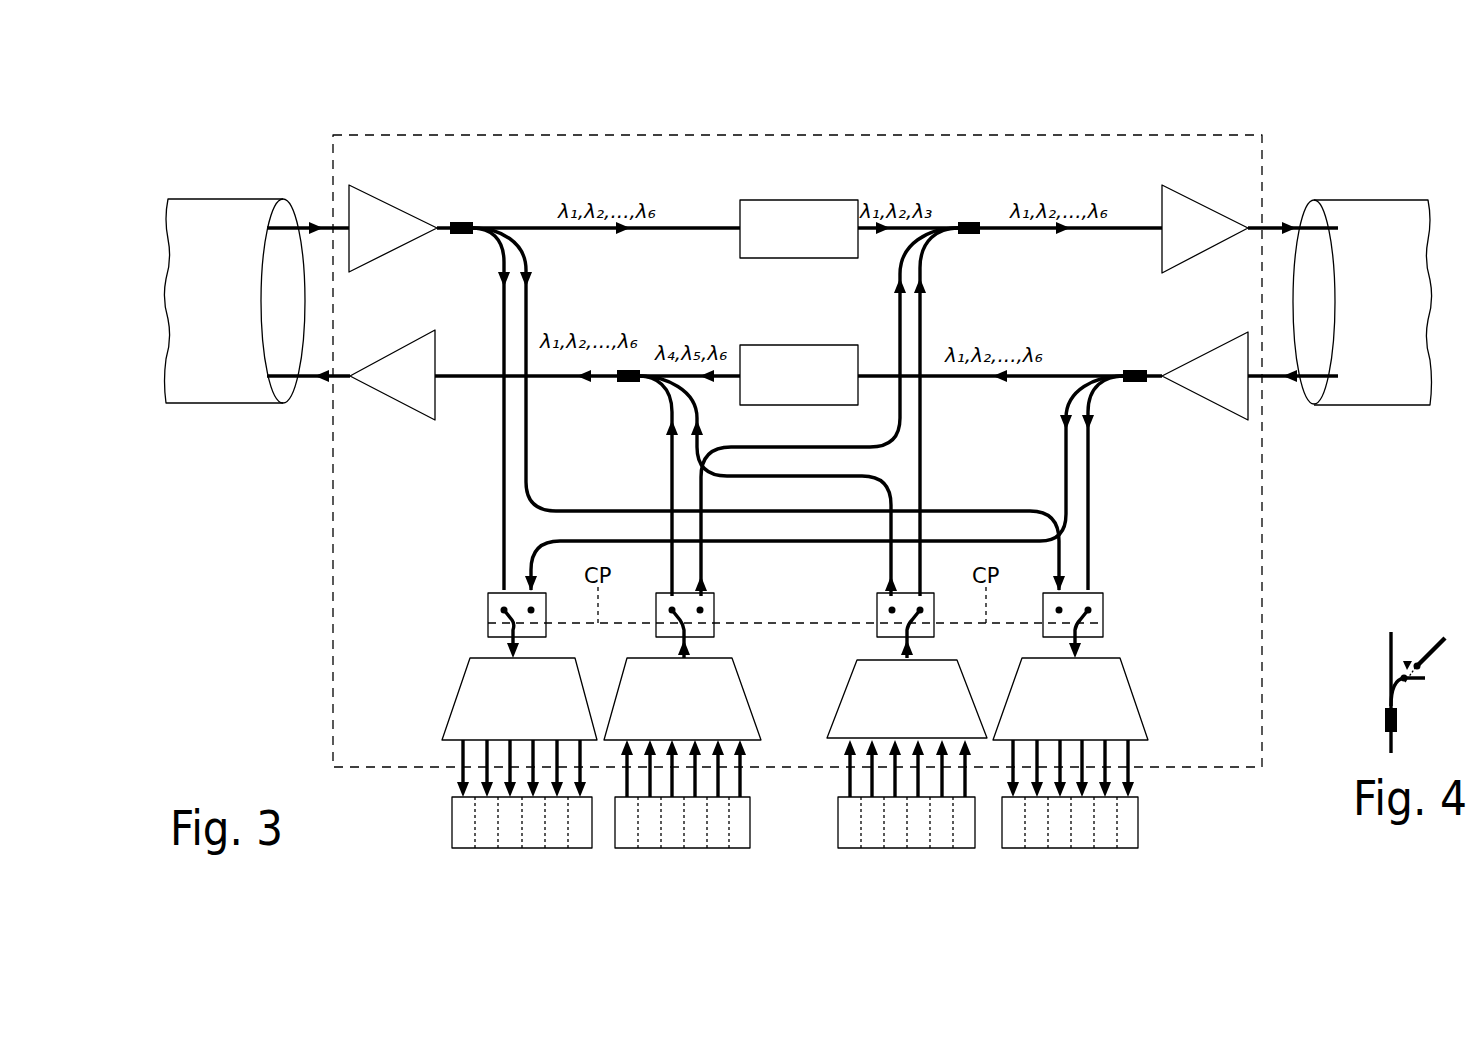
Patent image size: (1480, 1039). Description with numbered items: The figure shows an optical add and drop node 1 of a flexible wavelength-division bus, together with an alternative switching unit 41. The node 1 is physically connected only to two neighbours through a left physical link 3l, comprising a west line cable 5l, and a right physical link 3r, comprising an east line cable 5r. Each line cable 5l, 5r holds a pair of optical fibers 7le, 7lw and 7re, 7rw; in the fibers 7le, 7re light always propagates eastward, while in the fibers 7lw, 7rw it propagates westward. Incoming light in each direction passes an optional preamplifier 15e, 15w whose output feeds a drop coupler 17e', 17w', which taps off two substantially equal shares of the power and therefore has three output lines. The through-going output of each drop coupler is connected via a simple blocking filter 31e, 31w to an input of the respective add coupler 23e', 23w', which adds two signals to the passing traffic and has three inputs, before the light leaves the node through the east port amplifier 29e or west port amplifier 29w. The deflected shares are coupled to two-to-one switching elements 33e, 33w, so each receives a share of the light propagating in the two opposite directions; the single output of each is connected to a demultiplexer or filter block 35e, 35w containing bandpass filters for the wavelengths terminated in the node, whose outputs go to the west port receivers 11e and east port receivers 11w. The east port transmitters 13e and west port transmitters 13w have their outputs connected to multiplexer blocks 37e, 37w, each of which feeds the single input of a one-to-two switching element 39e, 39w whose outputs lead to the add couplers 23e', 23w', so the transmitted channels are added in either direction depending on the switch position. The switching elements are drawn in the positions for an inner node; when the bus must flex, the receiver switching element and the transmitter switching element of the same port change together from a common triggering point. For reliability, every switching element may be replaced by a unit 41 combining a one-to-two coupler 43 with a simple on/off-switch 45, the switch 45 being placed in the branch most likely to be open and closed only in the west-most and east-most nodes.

In FIG. 3, the add and drop node 1 is at (333, 533).
In FIG. 3, the left physical link 3l is at (234, 140).
In FIG. 3, the right physical link 3r is at (1370, 152).
In FIG. 3, the west line cable 5l is at (232, 405).
In FIG. 3, the east line cable 5r is at (1395, 405).
In FIG. 3, the optical fiber 7le is at (305, 221).
In FIG. 3, the optical fiber 7lw is at (310, 388).
In FIG. 3, the optical fiber 7re is at (1289, 223).
In FIG. 3, the optical fiber 7rw is at (1275, 388).
In FIG. 3, the preamplifier 15e is at (396, 217).
In FIG. 3, the preamplifier 15w is at (1210, 406).
In FIG. 3, the drop coupler 17e' is at (477, 204).
In FIG. 3, the drop coupler 17w' is at (1140, 404).
In FIG. 3, the add coupler 23e' is at (958, 254).
In FIG. 3, the add coupler 23w' is at (625, 401).
In FIG. 3, the east port amplifier 29e is at (1202, 208).
In FIG. 3, the west port amplifier 29w is at (404, 399).
In FIG. 3, the blocking filter 31e is at (850, 200).
In FIG. 3, the blocking filter 31w is at (802, 345).
In FIG. 3, the 2:1 switching element 33e is at (488, 613).
In FIG. 3, the 2:1 switching element 33w is at (1103, 610).
In FIG. 3, the demultiplexer 35e is at (580, 684).
In FIG. 3, the demultiplexer 35w is at (1120, 690).
In FIG. 3, the multiplexer block 37e is at (853, 690).
In FIG. 3, the multiplexer block 37w is at (738, 680).
In FIG. 3, the 1:2 switching element 39e is at (877, 616).
In FIG. 3, the 1:2 switching element 39w is at (714, 615).
In FIG. 3, the west port receivers 11e is at (452, 814).
In FIG. 3, the east port receivers 11w is at (1138, 812).
In FIG. 3, the east port transmitters 13e is at (838, 822).
In FIG. 3, the west port transmitters 13w is at (750, 825).
In FIG. 4, the unit 41 is at (1366, 714).
In FIG. 4, the 1:2 coupler 43 is at (1398, 726).
In FIG. 4, the on/off-switch 45 is at (1416, 642).